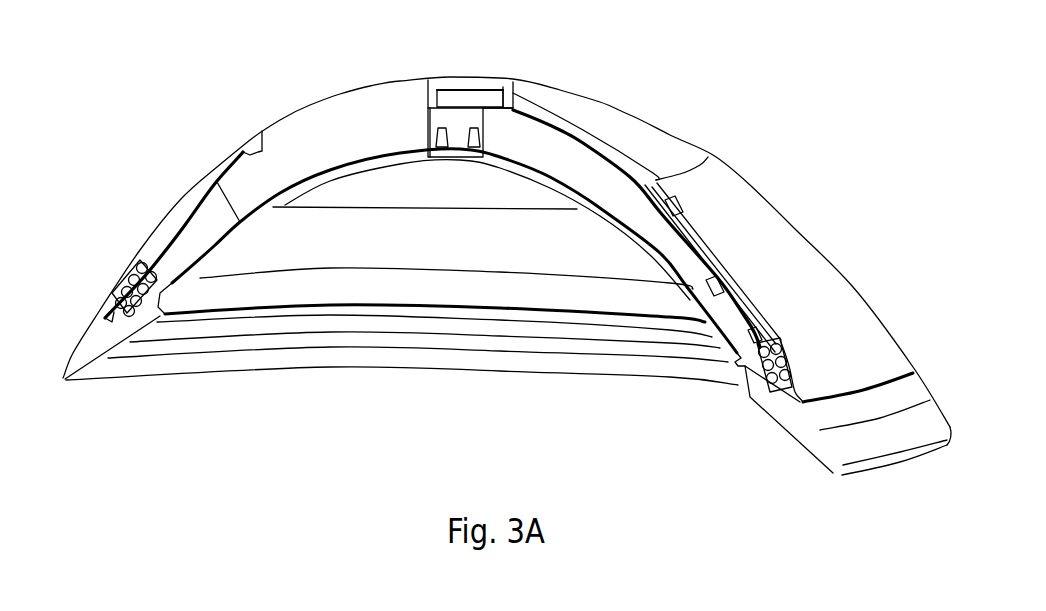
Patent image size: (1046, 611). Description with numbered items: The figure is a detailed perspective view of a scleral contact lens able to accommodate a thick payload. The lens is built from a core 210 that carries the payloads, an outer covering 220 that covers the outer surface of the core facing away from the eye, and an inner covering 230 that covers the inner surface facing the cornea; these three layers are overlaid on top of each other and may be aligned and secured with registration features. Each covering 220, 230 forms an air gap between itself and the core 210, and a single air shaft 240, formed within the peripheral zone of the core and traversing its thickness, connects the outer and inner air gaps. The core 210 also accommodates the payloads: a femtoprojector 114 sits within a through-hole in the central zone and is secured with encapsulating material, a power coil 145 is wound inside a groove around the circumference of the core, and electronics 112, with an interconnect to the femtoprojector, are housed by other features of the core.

The electronics 112 is at (697, 263).
The femtoprojector 114 is at (463, 97).
The coil 145 is at (780, 347).
The core 210 is at (349, 147).
The outer covering 220 is at (213, 242).
The inner covering 230 is at (223, 238).
The air shaft 240 is at (208, 210).